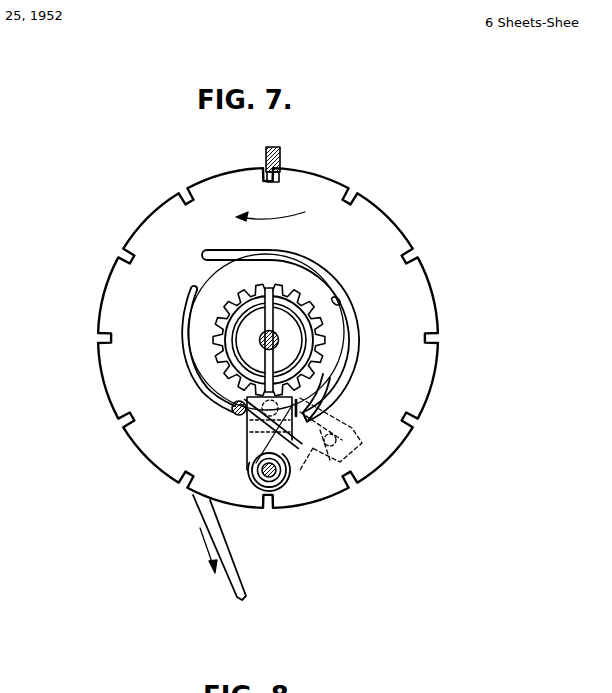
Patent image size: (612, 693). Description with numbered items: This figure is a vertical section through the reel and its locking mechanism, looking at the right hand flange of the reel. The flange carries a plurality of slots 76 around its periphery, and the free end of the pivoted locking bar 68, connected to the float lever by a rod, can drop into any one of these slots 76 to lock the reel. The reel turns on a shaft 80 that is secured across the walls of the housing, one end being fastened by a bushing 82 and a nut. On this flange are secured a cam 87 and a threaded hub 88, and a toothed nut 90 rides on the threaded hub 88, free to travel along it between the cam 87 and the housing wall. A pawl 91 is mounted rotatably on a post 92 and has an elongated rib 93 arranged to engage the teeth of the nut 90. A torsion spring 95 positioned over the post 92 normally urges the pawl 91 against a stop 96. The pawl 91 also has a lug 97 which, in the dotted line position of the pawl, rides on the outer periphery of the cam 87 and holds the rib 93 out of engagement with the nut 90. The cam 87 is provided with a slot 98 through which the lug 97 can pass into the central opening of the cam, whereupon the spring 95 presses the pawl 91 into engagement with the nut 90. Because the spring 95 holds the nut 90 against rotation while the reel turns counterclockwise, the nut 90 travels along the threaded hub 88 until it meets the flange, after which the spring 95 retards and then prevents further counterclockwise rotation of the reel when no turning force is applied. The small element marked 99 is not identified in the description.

The locking bar 68 is at (281, 150).
The slots 76 is at (190, 183).
The shaft 80 is at (262, 333).
The bushing 82 is at (291, 357).
The cam 87 is at (318, 275).
The threaded hub 88 is at (237, 353).
The toothed nut 90 is at (326, 325).
The pawl 91 is at (330, 432).
The post 92 is at (262, 474).
The elongated rib 93 is at (310, 396).
The torsion spring 95 is at (243, 427).
The stop 96 is at (232, 410).
The lug 97 is at (291, 455).
The slot 98 is at (195, 287).
The pin hole 99 is at (340, 300).